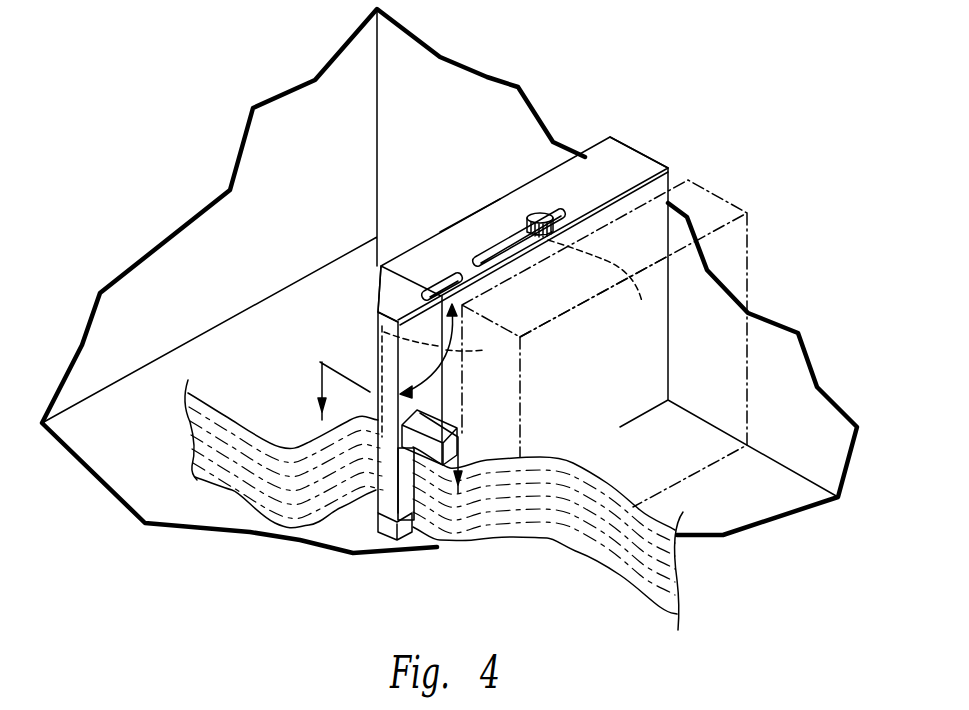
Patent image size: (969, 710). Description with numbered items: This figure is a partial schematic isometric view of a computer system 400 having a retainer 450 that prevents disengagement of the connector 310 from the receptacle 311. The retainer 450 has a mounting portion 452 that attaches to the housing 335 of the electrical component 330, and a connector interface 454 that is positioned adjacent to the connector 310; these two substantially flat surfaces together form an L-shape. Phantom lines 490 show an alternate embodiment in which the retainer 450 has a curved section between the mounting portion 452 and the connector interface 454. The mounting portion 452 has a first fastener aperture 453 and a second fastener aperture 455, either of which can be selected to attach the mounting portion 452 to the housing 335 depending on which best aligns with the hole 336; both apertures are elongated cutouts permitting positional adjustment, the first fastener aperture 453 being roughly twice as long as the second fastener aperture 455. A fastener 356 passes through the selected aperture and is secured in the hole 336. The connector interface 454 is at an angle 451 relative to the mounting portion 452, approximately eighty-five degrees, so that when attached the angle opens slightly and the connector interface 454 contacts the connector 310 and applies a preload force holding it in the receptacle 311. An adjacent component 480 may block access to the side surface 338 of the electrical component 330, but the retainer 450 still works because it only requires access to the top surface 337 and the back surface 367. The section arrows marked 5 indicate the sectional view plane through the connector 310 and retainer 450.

The computer system 400 is at (219, 72).
The electrical component 330 is at (548, 163).
The top surface 337 is at (613, 135).
The adjacent component 480 is at (737, 207).
The housing 335 is at (452, 238).
The first fastener aperture 453 is at (481, 258).
The second fastener aperture 455 is at (432, 277).
The back surface 367 is at (378, 285).
The retainer 450 is at (377, 337).
The fastener 356 is at (567, 214).
The mounting portion 452 is at (505, 258).
The hole 336 is at (594, 296).
The angle 451 is at (467, 333).
The phantom lines 490 is at (446, 377).
The receptacle 311 is at (445, 404).
The section line 5- 5 is at (390, 416).
The side surface 338 is at (662, 379).
The connector interface 454 is at (388, 530).
The connector 310 is at (414, 544).